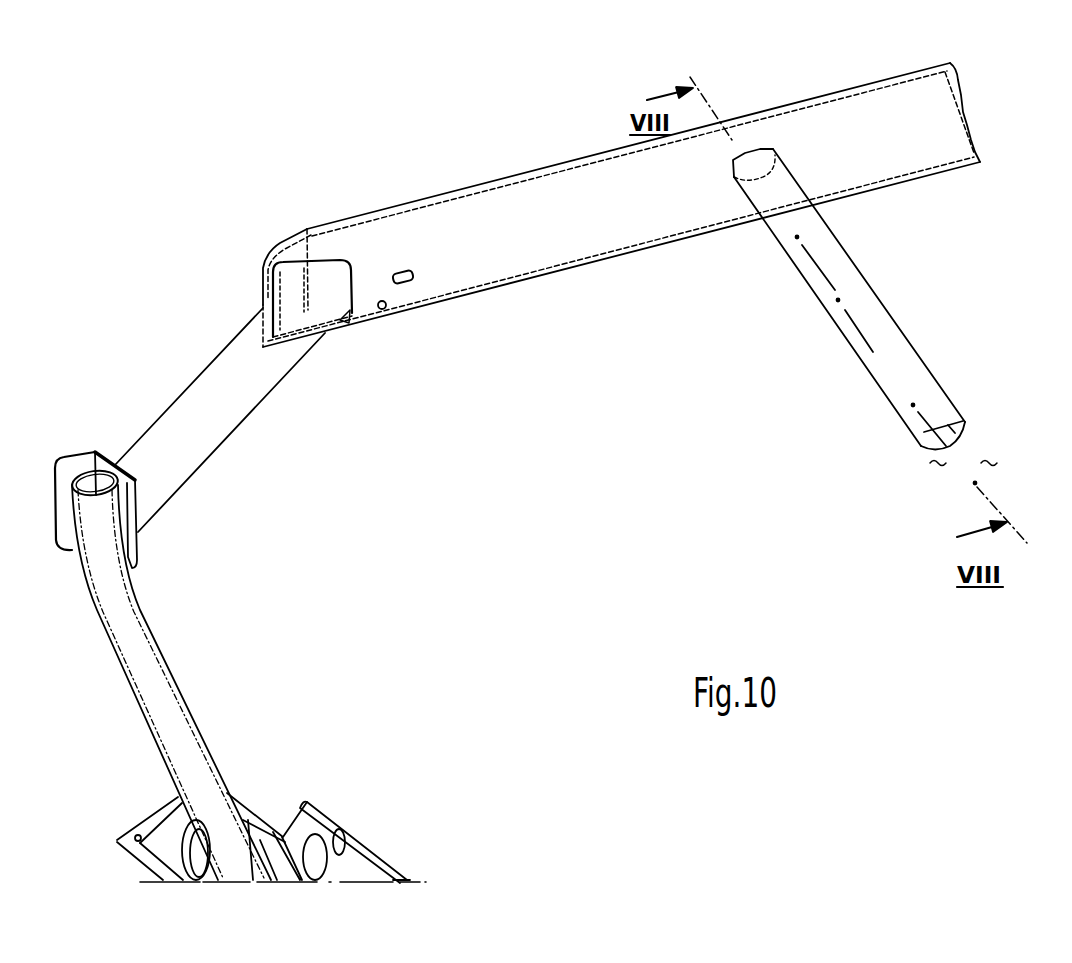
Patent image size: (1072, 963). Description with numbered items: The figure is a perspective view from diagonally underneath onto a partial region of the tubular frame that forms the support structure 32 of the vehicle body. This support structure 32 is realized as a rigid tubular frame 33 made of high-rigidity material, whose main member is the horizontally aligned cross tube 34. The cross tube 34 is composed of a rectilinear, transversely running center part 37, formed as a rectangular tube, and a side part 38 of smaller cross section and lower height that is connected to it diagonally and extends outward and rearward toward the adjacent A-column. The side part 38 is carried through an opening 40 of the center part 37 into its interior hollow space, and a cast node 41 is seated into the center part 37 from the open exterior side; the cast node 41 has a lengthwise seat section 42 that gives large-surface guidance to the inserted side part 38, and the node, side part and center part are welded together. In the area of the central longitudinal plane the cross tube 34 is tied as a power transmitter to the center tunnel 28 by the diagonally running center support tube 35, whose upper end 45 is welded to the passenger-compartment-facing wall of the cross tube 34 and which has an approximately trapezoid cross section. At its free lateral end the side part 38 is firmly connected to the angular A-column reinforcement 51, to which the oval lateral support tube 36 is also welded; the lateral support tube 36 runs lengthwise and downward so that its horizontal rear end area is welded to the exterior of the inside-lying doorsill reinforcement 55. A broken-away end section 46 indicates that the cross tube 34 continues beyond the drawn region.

The center tunnel 28 is at (963, 464).
The support structure 32 is at (317, 190).
The rigid tubular frame 33 is at (581, 150).
The cross tube 34 is at (575, 272).
The center support tube 35 is at (888, 316).
The lateral support tube 36 is at (177, 700).
The center part 37 is at (687, 213).
The side part 38 is at (220, 430).
The opening 40 is at (338, 273).
The cast node 41 is at (258, 250).
The seat section 42 is at (330, 307).
The upper end 45 is at (777, 140).
The rail end section 46 is at (833, 133).
The A-column reinforcement 51 is at (84, 458).
The doorsill reinforcement 55 is at (367, 850).